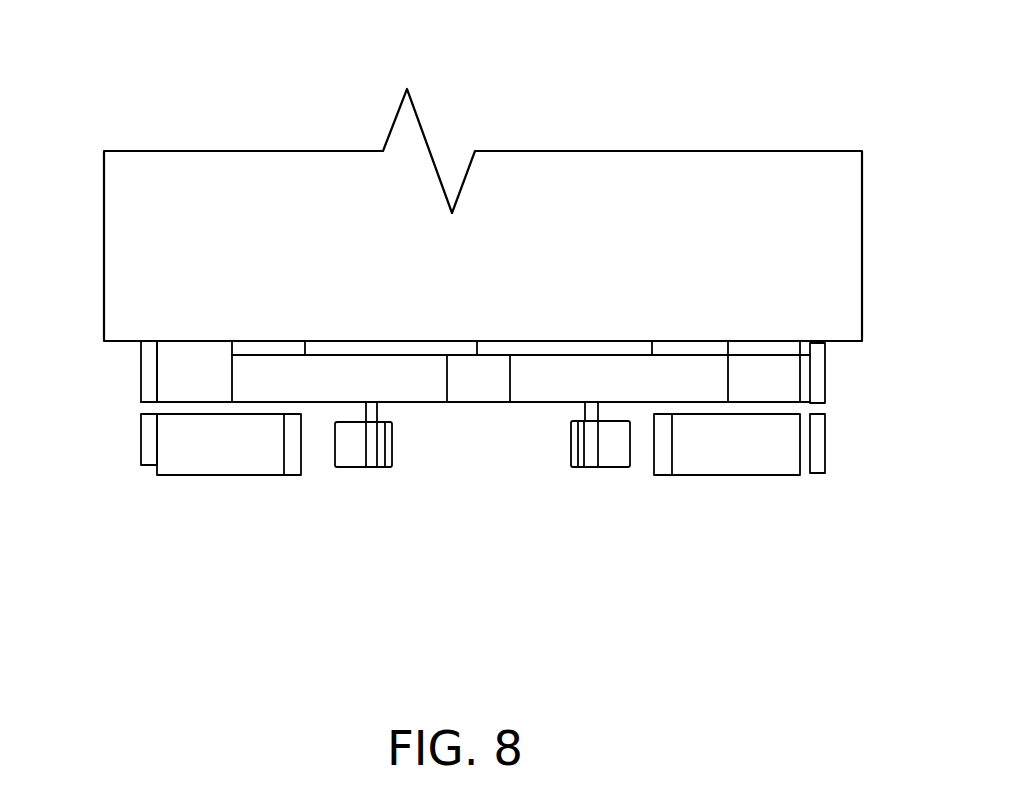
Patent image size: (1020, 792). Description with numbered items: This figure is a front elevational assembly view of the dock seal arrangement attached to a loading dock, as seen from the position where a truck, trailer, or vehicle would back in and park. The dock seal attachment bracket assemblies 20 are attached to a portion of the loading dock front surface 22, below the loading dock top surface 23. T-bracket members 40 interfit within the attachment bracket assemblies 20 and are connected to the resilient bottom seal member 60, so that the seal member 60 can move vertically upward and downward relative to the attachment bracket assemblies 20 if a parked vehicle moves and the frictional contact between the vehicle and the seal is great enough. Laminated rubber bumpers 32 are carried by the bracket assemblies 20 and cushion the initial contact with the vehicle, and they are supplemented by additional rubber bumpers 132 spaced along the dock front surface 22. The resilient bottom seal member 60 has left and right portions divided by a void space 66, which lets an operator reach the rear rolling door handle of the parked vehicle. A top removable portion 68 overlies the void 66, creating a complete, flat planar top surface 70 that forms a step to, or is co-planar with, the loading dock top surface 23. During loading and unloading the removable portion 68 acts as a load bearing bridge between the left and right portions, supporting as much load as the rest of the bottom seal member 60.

The dock seal attachment bracket assembly 20 is at (565, 422).
The loading dock front surface 22 is at (100, 394).
The loading dock top surface 23 is at (843, 340).
The laminated rubber bumper 32 is at (347, 458).
The T-bracket member 40 is at (367, 408).
The resilient bottom seal member 60 is at (578, 346).
The void space 66 is at (477, 380).
The top removable portion 68 is at (477, 355).
The planar top surface 70 is at (265, 356).
The rubber bumper 132 is at (173, 386).